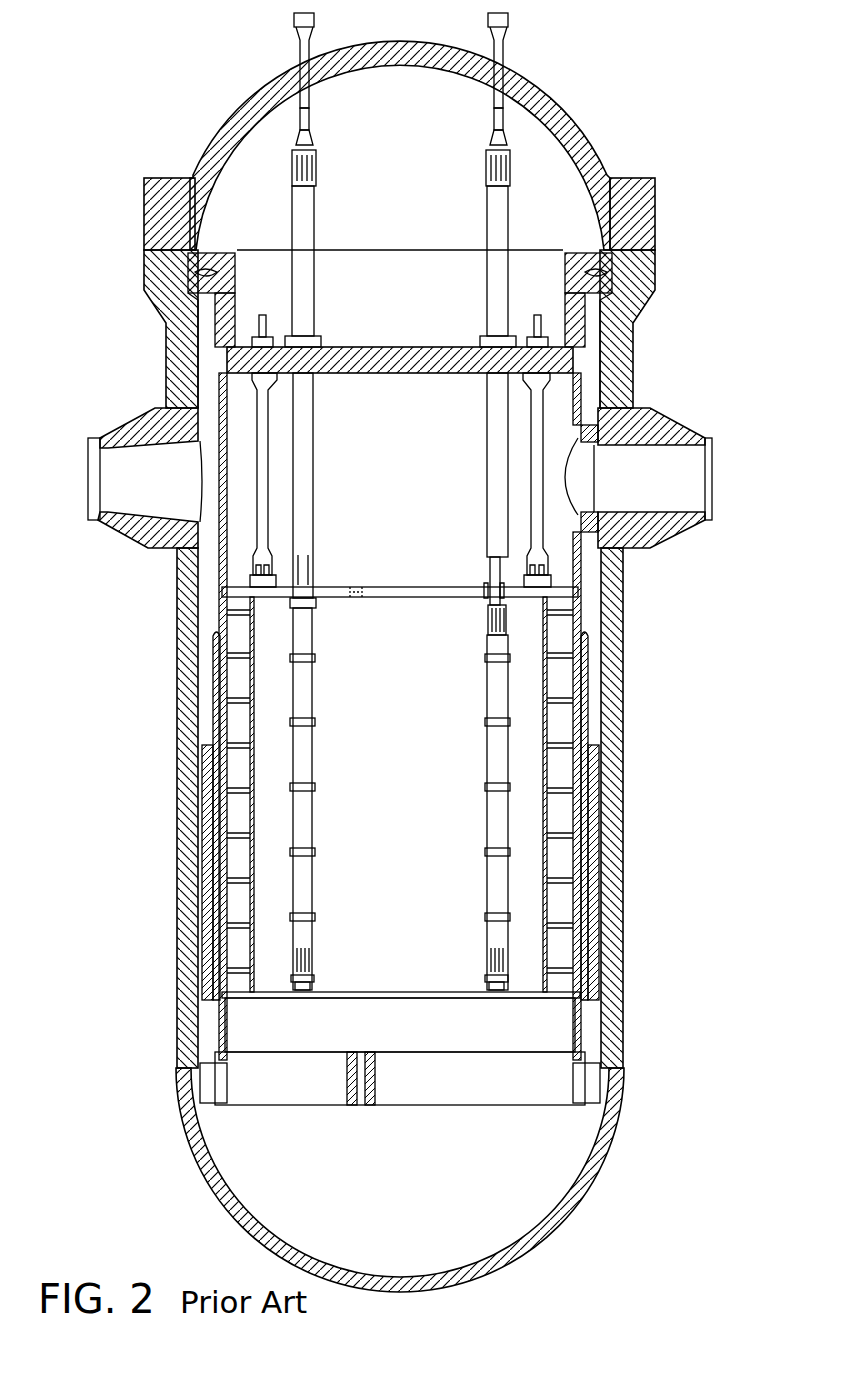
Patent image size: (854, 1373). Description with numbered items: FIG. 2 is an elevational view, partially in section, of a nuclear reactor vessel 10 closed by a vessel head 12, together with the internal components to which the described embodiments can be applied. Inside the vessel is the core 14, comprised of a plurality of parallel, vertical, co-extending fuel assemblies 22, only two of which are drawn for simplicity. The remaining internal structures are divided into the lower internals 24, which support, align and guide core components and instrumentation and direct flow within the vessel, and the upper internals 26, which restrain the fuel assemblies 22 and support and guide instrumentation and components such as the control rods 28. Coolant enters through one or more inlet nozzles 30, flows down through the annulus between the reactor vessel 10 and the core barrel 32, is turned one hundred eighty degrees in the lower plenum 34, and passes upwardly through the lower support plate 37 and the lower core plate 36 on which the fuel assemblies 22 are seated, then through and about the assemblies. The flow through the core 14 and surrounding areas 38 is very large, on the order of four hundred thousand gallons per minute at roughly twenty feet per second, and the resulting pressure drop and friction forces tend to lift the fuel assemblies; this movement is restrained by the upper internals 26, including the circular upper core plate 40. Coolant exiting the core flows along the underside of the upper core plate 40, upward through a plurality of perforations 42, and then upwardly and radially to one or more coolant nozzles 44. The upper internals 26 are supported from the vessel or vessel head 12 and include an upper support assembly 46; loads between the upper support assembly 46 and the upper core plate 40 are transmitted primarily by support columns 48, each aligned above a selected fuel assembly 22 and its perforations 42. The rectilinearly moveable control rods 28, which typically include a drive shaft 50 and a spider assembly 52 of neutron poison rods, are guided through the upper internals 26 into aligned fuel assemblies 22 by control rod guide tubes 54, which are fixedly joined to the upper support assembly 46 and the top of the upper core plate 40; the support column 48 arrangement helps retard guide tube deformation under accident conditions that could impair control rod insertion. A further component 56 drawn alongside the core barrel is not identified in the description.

The reactor pressure vessel 10 is at (622, 660).
The closure head 12 is at (655, 214).
The core 14 is at (403, 772).
The fuel assemblies 22 is at (313, 696).
The lower internals 24 is at (400, 1025).
The upper internals 26 is at (406, 439).
The control rods 28 is at (482, 606).
The inlet nozzles 30 is at (132, 422).
The core barrel 32 is at (212, 586).
The lower plenum 34 is at (565, 1157).
The lower core plate 36 is at (463, 988).
The lower support plate 37 is at (440, 1095).
The surrounding areas 38 is at (455, 757).
The upper core plate 40 is at (437, 598).
The perforations 42 is at (358, 584).
The coolant nozzles 44 is at (665, 416).
The upper support assembly 46 is at (574, 250).
The support columns 48 is at (272, 476).
The drive shaft 50 is at (490, 560).
The spider assembly 52 is at (486, 590).
The control rod guide tubes 54 is at (312, 420).
The thermal shield 56 is at (590, 627).